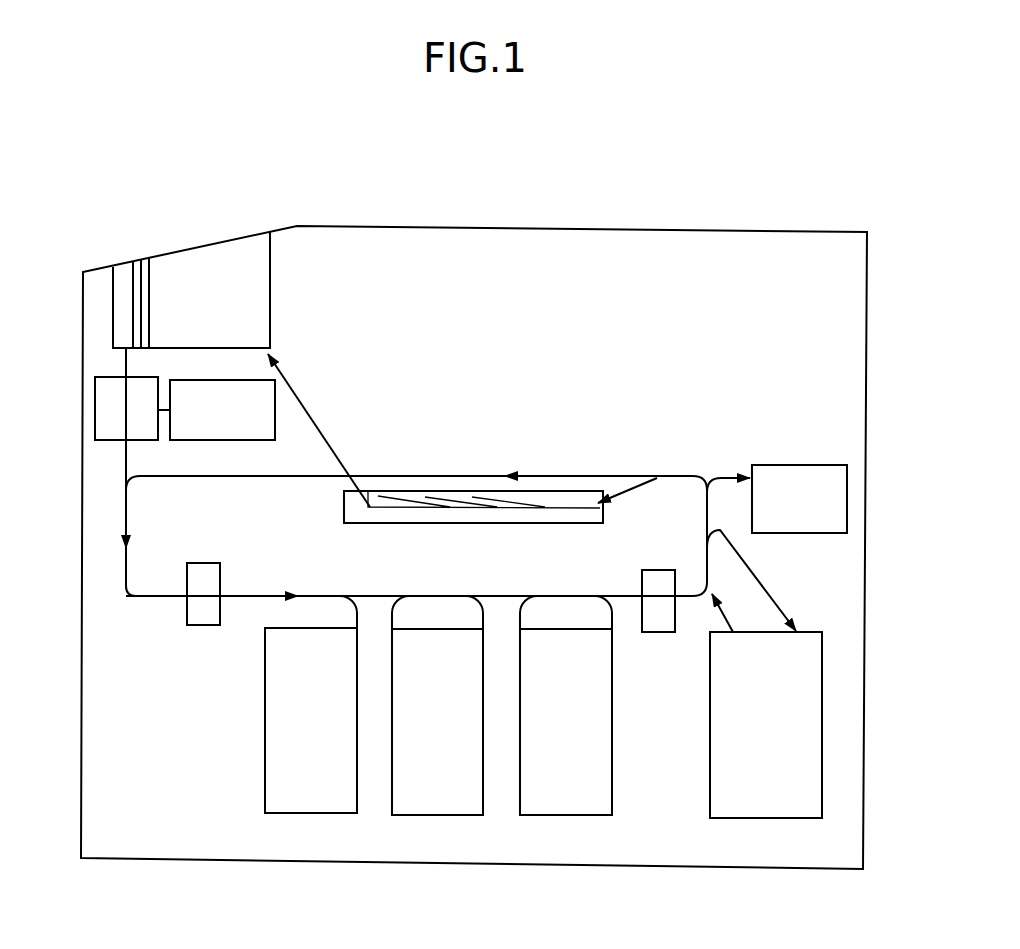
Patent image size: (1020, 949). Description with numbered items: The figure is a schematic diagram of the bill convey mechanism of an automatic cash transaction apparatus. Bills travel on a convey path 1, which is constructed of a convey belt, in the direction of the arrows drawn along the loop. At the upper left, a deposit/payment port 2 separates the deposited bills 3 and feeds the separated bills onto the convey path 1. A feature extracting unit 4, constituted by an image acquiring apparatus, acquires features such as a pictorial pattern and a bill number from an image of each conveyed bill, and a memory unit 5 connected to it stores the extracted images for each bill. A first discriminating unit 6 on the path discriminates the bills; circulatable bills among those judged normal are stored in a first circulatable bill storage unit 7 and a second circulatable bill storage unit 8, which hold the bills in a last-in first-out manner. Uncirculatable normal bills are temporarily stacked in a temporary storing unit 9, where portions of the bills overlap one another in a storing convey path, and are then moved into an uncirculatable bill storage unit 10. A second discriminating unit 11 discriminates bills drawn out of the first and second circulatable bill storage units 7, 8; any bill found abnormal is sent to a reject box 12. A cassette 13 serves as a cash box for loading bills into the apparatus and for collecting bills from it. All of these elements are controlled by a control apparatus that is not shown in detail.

The convey path 1 is at (377, 476).
The deposit/payment port 2 is at (263, 267).
The deposited bills 3 is at (153, 277).
The feature extracting unit 4 is at (100, 418).
The memory unit 5 is at (278, 413).
The first discriminating unit 6 is at (203, 625).
The first circulatable bill storage unit 7 is at (435, 815).
The second circulatable bill storage unit 8 is at (565, 815).
The temporary storing unit 9 is at (565, 491).
The uncirculatable bill storage unit 10 is at (306, 813).
The second discriminating unit 11 is at (660, 632).
The reject box 12 is at (847, 505).
The cassette 13 is at (807, 672).